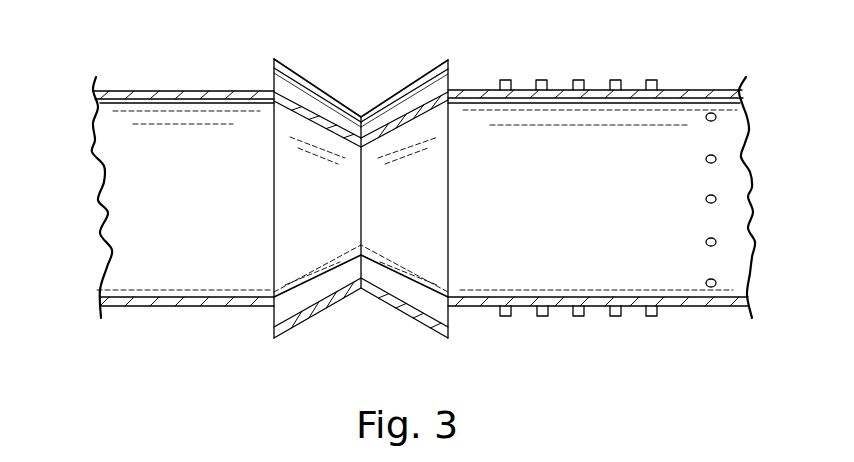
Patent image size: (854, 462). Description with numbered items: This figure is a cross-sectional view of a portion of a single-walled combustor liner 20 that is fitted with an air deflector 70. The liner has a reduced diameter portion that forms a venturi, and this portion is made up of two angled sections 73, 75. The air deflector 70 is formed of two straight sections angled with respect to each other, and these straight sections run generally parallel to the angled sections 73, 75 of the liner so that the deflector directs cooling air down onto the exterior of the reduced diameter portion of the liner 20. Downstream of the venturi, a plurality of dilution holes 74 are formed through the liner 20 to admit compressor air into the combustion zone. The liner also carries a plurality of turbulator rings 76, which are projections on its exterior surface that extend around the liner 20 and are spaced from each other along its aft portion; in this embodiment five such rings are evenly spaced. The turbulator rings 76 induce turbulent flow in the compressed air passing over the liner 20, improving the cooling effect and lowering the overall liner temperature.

The single-walled combustor liner 20 is at (158, 91).
The air deflector 70 is at (328, 92).
The angled section 73 is at (292, 113).
The dilution holes 74 is at (710, 113).
The angled section 75 is at (413, 118).
The turbulator rings 76 is at (505, 80).